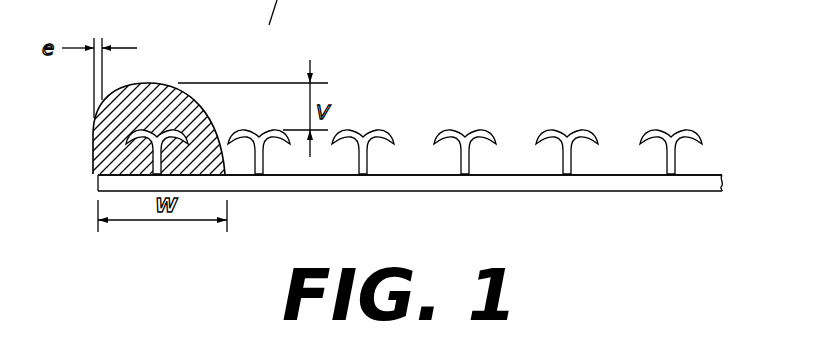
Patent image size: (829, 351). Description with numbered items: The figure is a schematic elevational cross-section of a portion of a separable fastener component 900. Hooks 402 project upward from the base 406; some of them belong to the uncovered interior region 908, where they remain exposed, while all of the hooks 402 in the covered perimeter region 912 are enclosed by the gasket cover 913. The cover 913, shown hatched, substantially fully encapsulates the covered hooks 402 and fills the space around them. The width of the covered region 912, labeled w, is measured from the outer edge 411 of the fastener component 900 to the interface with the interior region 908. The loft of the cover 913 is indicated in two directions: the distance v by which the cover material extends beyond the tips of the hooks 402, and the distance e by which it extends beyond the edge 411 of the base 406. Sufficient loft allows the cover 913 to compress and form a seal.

The hooks 402 is at (351, 109).
The base 406 is at (528, 184).
The outer edge 411 is at (97, 181).
The fastener component 900 is at (397, 140).
The uncovered interior region 908 is at (397, 109).
The covered perimeter region 912 is at (153, 95).
The gasket cover 913 is at (207, 114).